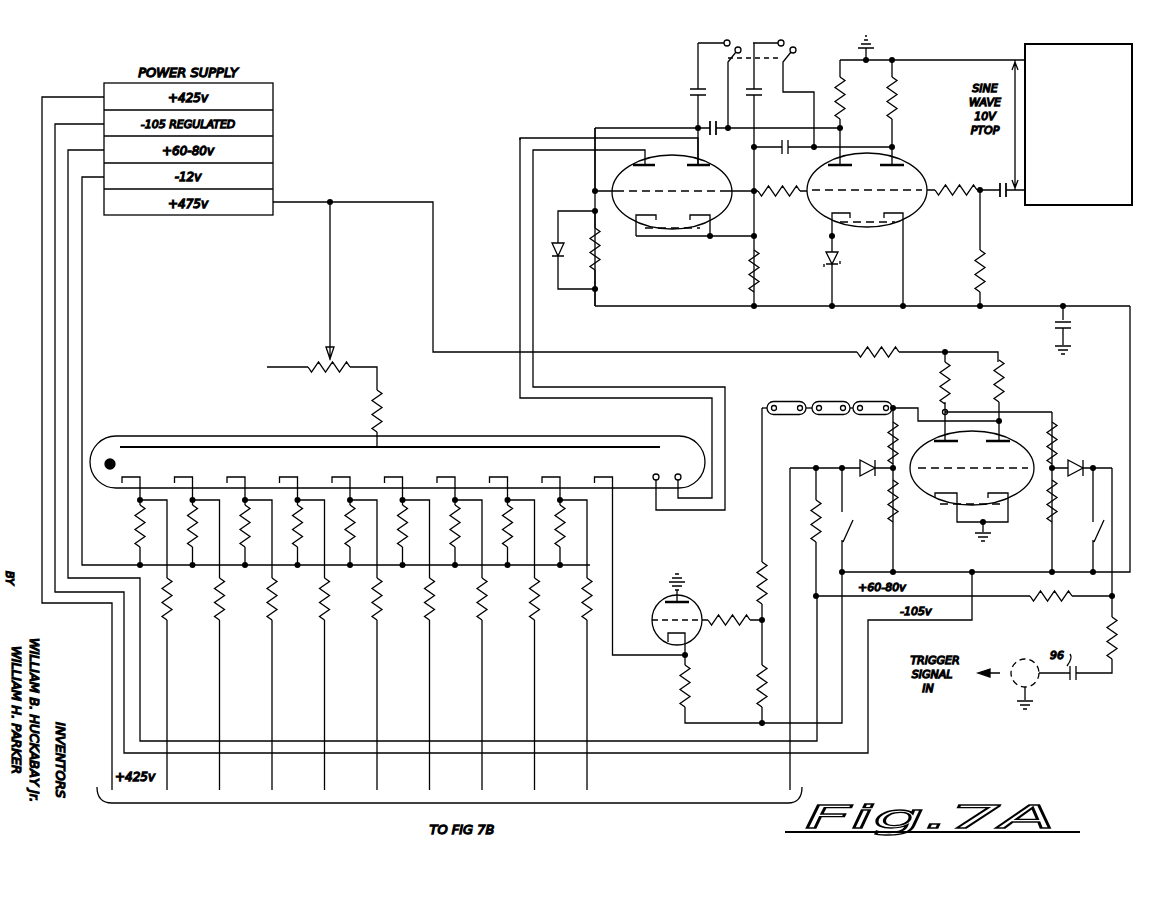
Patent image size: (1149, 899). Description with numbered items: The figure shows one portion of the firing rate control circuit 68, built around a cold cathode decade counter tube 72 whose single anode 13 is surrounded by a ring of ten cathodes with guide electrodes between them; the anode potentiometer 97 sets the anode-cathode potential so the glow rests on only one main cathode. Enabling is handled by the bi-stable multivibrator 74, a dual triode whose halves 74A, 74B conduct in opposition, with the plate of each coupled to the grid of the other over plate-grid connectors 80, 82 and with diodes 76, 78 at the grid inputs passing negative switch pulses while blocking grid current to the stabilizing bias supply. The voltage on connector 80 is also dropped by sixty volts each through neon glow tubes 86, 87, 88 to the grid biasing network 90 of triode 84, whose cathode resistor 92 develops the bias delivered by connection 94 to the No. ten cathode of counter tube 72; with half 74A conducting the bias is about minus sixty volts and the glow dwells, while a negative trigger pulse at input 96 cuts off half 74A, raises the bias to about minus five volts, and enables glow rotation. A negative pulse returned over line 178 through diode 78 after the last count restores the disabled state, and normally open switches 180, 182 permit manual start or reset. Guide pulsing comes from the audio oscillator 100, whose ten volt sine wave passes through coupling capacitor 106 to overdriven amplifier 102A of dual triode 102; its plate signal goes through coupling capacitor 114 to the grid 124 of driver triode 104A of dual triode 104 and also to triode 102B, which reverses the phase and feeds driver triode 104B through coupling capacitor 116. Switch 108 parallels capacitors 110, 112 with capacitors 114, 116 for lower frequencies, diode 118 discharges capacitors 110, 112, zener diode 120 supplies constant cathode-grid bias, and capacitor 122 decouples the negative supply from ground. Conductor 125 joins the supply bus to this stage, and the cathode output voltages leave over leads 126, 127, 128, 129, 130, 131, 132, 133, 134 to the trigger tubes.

The firing rate control circuit 68 is at (472, 102).
The decade counter tube 72 is at (397, 456).
The anode 13 is at (390, 456).
The bi-stable multivibrator 74 is at (974, 486).
The triode half 74A is at (1010, 515).
The triode half 74B is at (951, 515).
The diode 76 is at (1073, 464).
The diode 78 is at (874, 456).
The plate-grid connector 80 is at (928, 408).
The plate-grid connector 82 is at (983, 408).
The triode 84 is at (692, 601).
The neon glow tube 86 is at (878, 398).
The neon glow tube 87 is at (834, 398).
The neon glow tube 88 is at (789, 398).
The grid biasing network 90 is at (762, 621).
The cathode resistor 92 is at (680, 689).
The connection 94 is at (618, 566).
The input 96 is at (110, 564).
The anode potentiometer 97 is at (341, 371).
The audio oscillator 100 is at (1066, 159).
The dual triode 102 is at (860, 194).
The overdriven A.C. amplifier 102A is at (909, 224).
The triode 102B is at (818, 224).
The dual triode 104 is at (672, 204).
The driver triode 104A is at (706, 234).
The driver triode 104B is at (635, 234).
The coupling capacitor 106 is at (1004, 178).
The switch 108 is at (766, 37).
The capacitor 110 is at (764, 95).
The capacitor 112 is at (691, 99).
The coupling capacitor 114 is at (789, 168).
The coupling capacitor 116 is at (713, 142).
The diode 118 is at (563, 253).
The zener diode 120 is at (822, 268).
The capacitor 122 is at (1055, 327).
The grid 124 is at (756, 200).
The conductor 125 is at (590, 190).
The lead 126 is at (168, 778).
The lead 127 is at (221, 778).
The lead 128 is at (273, 778).
The lead 129 is at (326, 778).
The lead 130 is at (378, 778).
The lead 131 is at (431, 778).
The lead 132 is at (483, 778).
The lead 133 is at (536, 778).
The lead 134 is at (588, 778).
The line 178 is at (792, 778).
The switch 180 is at (1090, 532).
The switch 182 is at (855, 536).